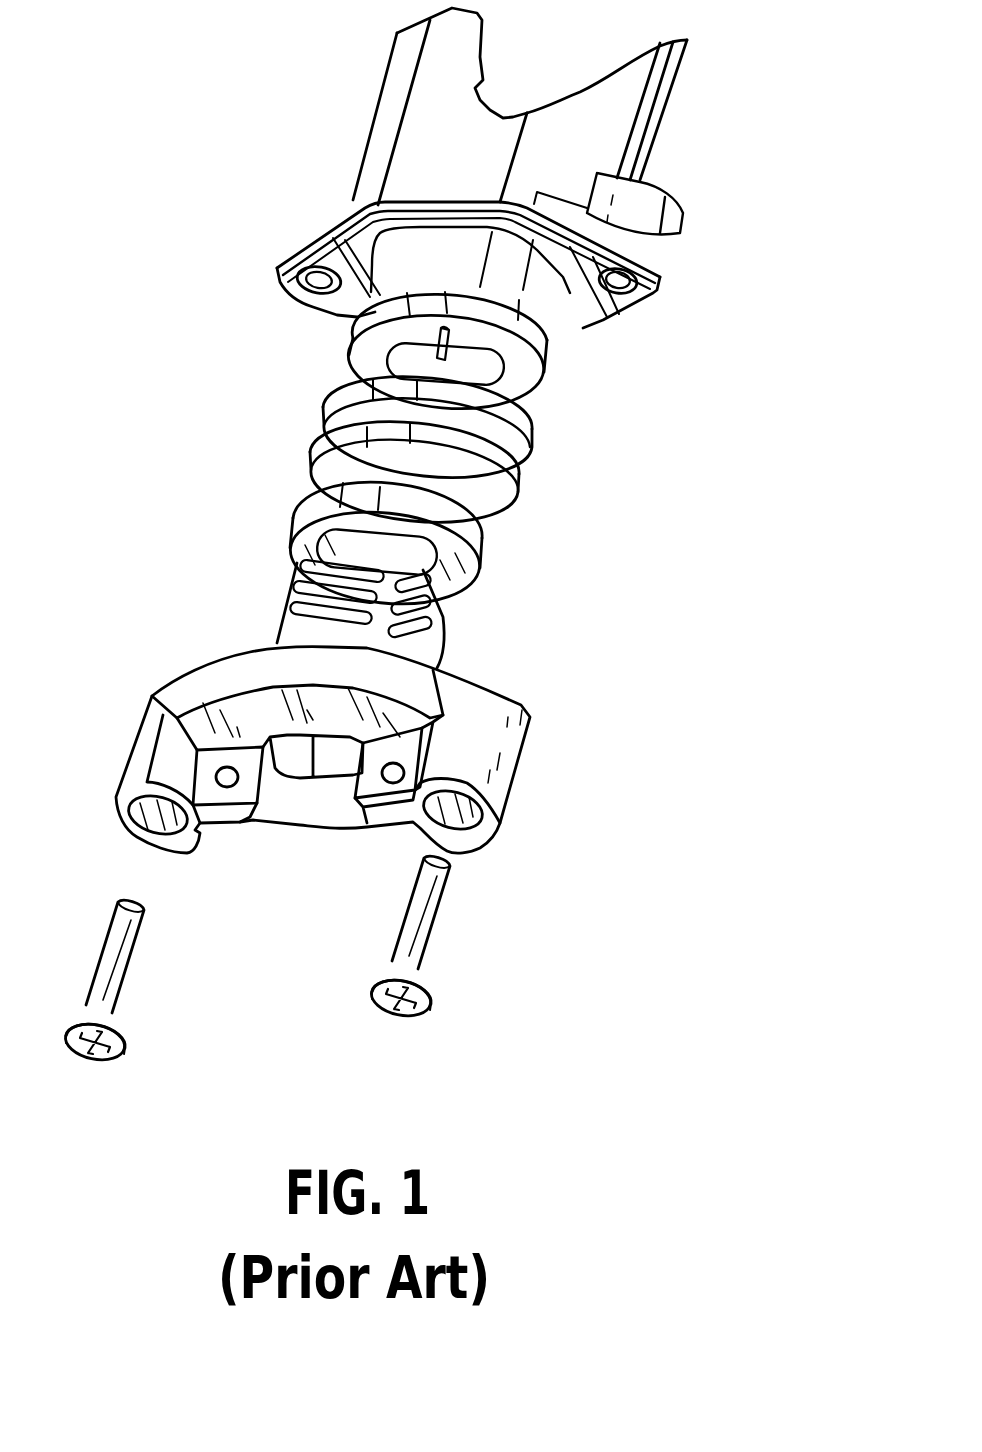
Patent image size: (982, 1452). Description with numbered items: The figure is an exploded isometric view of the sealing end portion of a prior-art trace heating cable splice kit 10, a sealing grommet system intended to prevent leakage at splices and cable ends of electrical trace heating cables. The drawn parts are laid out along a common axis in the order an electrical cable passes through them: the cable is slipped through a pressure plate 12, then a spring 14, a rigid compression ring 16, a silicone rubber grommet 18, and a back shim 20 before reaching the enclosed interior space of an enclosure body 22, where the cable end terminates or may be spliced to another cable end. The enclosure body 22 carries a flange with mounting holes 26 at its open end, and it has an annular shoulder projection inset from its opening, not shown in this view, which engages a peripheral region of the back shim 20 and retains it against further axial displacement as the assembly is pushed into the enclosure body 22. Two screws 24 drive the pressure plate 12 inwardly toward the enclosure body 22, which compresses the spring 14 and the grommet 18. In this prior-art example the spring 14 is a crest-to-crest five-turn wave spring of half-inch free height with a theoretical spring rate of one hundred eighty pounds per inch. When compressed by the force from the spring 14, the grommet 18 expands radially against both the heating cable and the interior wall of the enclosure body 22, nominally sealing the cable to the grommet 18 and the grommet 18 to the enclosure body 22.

The kit 10 is at (456, 536).
The pressure plate 12 is at (533, 718).
The spring 14 is at (452, 627).
The rigid compression ring 16 is at (490, 558).
The silicone rubber grommet 18 is at (537, 436).
The back shim 20 is at (553, 363).
The enclosure body 22 is at (563, 168).
The screws 24 is at (455, 896).
The mounting holes 26 is at (627, 287).